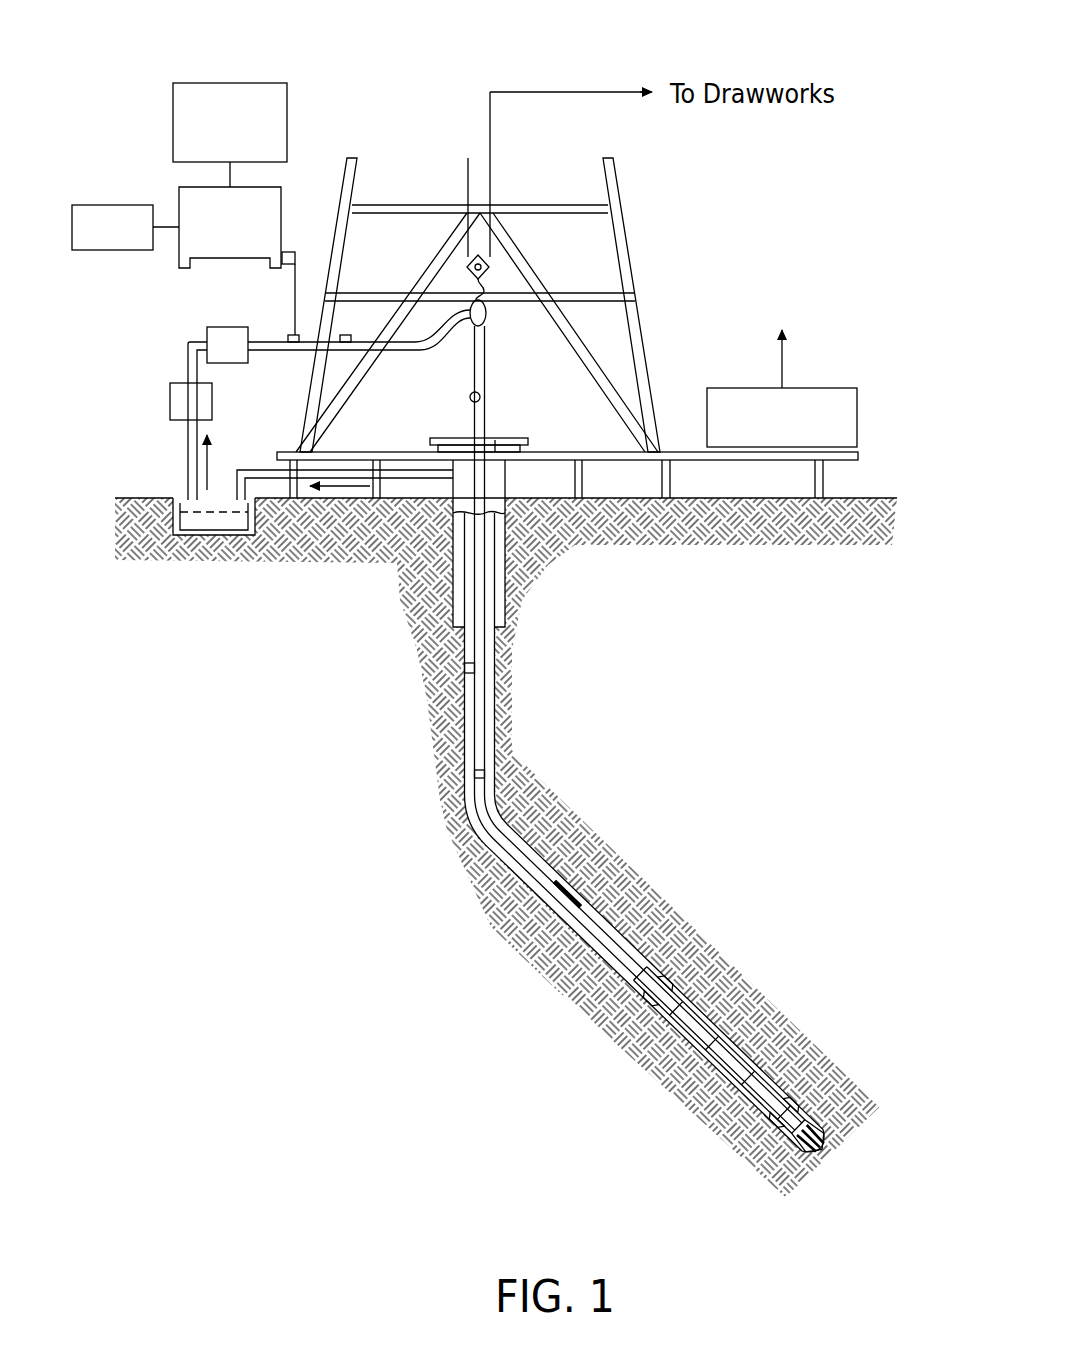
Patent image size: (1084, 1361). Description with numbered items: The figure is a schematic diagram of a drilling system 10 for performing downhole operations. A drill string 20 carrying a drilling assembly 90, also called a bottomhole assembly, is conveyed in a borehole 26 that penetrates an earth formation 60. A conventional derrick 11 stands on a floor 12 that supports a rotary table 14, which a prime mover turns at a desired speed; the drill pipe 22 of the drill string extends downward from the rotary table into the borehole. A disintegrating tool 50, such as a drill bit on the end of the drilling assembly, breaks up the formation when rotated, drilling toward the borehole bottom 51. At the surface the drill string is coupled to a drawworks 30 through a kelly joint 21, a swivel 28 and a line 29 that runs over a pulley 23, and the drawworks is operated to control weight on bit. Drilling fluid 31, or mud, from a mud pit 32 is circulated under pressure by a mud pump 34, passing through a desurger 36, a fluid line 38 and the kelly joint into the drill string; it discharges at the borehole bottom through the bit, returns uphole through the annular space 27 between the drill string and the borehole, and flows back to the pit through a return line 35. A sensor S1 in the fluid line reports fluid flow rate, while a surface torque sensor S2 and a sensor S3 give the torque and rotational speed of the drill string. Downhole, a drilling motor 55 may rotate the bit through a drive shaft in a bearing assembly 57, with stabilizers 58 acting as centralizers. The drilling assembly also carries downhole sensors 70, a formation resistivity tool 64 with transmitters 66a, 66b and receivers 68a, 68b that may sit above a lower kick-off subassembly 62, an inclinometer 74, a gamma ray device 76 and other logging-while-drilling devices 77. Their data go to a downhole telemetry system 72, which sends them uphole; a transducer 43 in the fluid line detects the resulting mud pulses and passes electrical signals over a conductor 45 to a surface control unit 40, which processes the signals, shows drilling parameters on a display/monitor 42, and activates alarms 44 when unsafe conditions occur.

The drilling system 10 is at (395, 118).
The derrick 11 is at (637, 307).
The floor 12 is at (658, 450).
The rotary table 14 is at (493, 438).
The drill string 20 is at (493, 642).
The kelly joint 21 is at (486, 360).
The drill pipe 22 is at (463, 693).
The pulley 23 is at (490, 265).
The borehole 26 is at (497, 802).
The annular space 27 is at (517, 830).
The swivel 28 is at (463, 330).
The line 29 is at (492, 188).
The drawworks 30 is at (840, 388).
The drilling fluid 31 is at (175, 528).
The mud pit 32 is at (240, 525).
The mud pump 34 is at (170, 400).
The return line 35 is at (415, 480).
The desurger 36 is at (215, 327).
The fluid line 38 is at (300, 352).
The surface control unit 40 is at (179, 195).
The display/monitor 42 is at (207, 83).
The transducer 43 is at (292, 335).
The alarms 44 is at (130, 250).
The conductor 45 is at (287, 252).
The disintegrating tool 50 is at (830, 1125).
The borehole bottom 51 is at (793, 1177).
The drilling motor 55 is at (627, 923).
The bearing assembly 57 is at (747, 1113).
The stabilizers 58 is at (643, 962).
The earth formation 60 is at (332, 886).
The lower kick-off subassembly 62 is at (772, 1060).
The formation resistivity tool 64 is at (690, 1040).
The transmitter 66a is at (640, 985).
The transmitter 66b is at (710, 1065).
The receiver 68a is at (660, 1015).
The receiver 68b is at (700, 1000).
The downhole sensors 70 is at (522, 867).
The downhole telemetry system 72 is at (478, 768).
The inclinometer 74 is at (720, 1025).
The gamma ray device 76 is at (765, 1040).
The logging-while-drilling devices 77 is at (557, 917).
The drilling assembly 90 is at (603, 883).
The sensor S1 is at (345, 335).
The surface torque sensor S2 is at (470, 397).
The sensor S3 is at (496, 440).